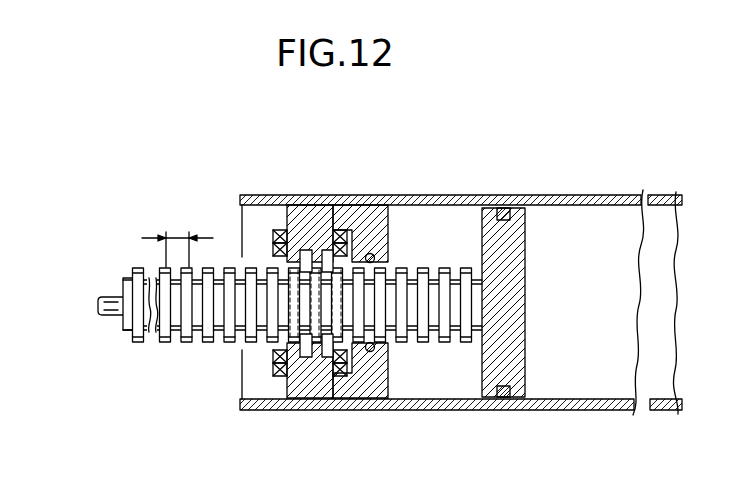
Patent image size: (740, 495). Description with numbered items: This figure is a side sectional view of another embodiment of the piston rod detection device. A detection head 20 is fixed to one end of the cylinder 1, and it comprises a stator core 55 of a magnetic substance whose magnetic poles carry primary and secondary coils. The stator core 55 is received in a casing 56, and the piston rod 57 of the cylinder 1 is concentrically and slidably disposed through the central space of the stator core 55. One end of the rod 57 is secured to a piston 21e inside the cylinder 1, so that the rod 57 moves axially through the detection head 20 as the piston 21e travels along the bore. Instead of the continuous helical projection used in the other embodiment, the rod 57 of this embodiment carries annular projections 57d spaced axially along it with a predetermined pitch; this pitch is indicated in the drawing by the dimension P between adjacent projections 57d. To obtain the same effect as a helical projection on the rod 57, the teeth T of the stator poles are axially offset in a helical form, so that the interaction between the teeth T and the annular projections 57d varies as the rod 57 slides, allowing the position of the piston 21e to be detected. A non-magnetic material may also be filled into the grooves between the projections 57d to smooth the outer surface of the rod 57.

The cylinder 1 is at (445, 196).
The detection head 20 is at (245, 192).
The stator core 55 is at (287, 217).
The casing 56 is at (285, 207).
The piston rod 57 is at (277, 304).
The annular projections 57d is at (170, 343).
The piston 21e is at (526, 327).
The teeth T is at (290, 261).
The pitch P is at (177, 239).